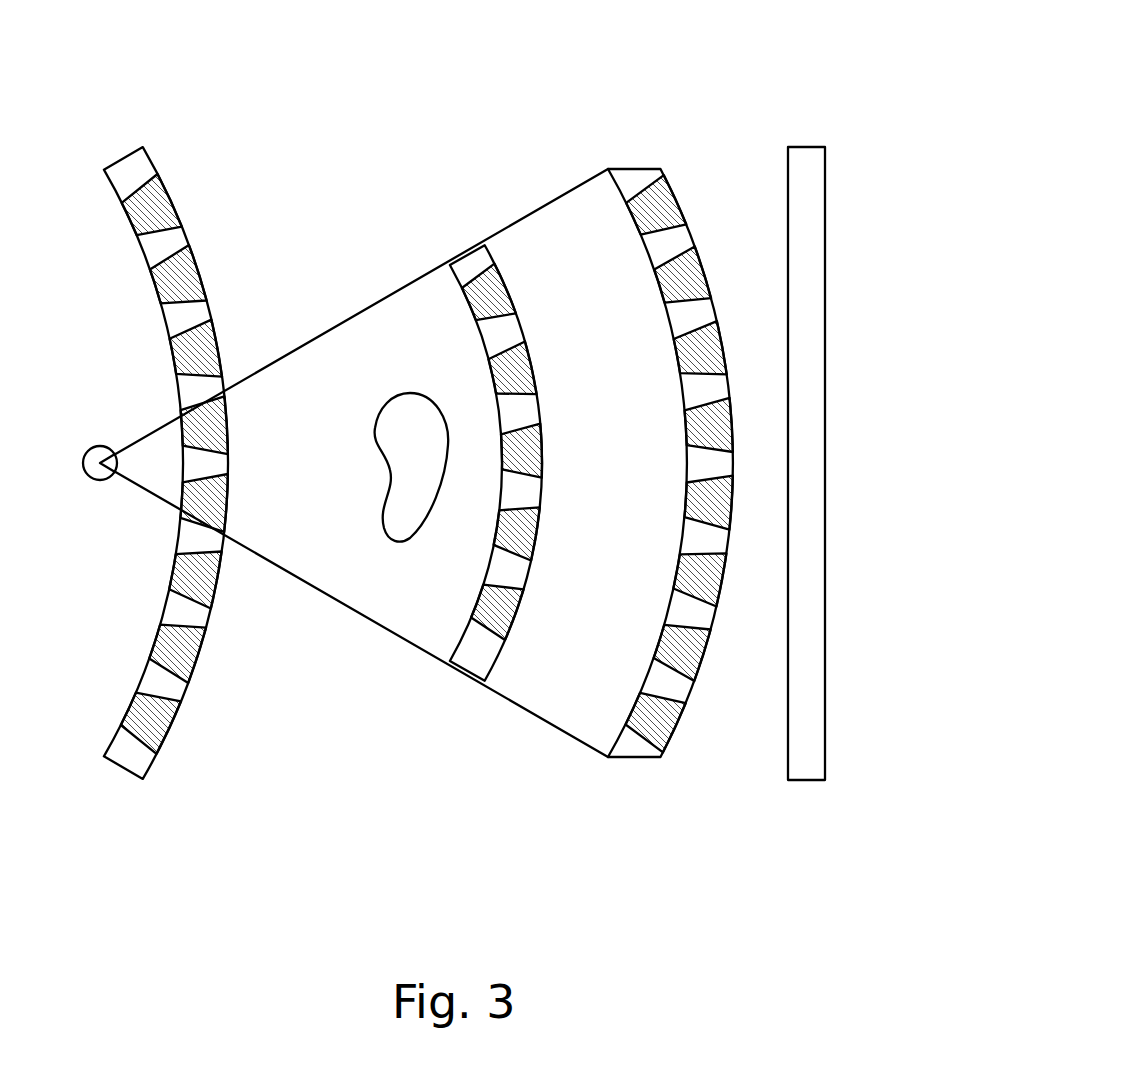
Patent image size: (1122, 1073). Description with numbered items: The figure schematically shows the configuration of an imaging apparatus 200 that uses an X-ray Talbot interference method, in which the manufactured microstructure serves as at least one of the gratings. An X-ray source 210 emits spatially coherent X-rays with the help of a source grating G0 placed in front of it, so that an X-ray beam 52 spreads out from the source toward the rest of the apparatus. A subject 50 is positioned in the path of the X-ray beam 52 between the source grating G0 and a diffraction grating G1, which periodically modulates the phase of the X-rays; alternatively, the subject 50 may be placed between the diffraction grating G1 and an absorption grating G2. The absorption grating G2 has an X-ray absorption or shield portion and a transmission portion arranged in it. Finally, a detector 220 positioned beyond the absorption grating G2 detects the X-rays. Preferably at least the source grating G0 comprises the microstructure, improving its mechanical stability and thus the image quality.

The imaging apparatus 200 is at (805, 103).
The X-ray source 210 is at (99, 446).
The detector 220 is at (825, 425).
The X-ray beam 52 is at (368, 305).
The subject 50 is at (393, 545).
The source grating G0 is at (121, 766).
The diffraction grating G1 is at (475, 663).
The absorption grating G2 is at (635, 758).